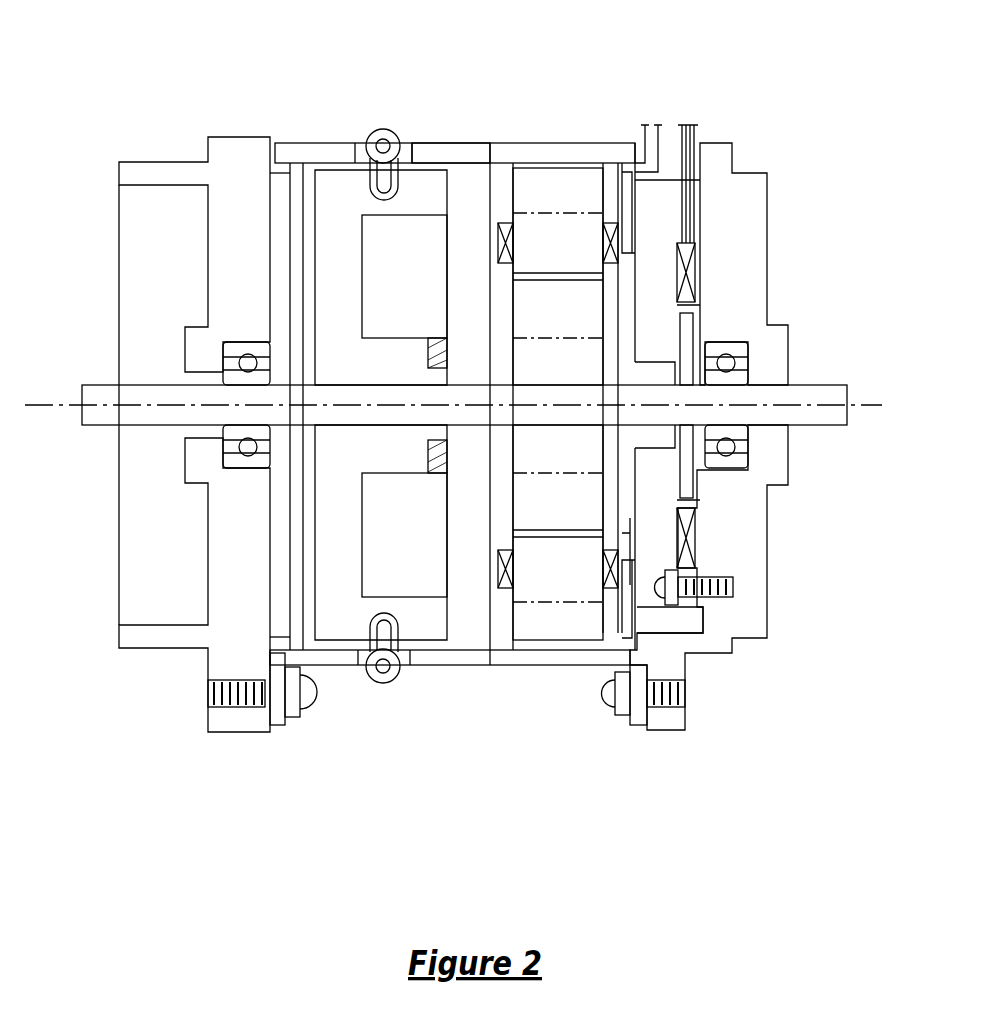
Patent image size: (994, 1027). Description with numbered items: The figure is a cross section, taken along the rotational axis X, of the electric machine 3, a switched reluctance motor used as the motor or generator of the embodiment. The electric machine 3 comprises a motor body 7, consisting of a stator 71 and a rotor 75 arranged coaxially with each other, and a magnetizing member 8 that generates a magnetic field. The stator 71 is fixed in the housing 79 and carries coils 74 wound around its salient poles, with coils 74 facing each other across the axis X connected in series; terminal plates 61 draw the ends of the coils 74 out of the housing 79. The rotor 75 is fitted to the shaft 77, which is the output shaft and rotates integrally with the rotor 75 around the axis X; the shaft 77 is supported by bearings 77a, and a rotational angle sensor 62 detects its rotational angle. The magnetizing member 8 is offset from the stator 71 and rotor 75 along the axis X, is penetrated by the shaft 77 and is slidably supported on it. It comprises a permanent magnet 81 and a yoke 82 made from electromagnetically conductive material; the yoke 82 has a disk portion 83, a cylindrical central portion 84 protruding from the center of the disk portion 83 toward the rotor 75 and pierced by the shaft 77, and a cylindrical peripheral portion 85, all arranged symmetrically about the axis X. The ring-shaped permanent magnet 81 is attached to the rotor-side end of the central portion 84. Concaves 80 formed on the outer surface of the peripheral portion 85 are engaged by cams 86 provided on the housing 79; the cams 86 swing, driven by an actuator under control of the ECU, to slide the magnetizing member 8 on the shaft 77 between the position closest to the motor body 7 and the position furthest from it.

The electric machine 3 is at (607, 824).
The motor body 7 is at (613, 56).
The magnetizing member 8 is at (434, 143).
The terminal plates 61 is at (636, 225).
The rotational angle sensor 62 is at (695, 273).
The stator 71 is at (523, 168).
The coils 74 is at (505, 222).
The rotor 75 is at (584, 278).
The shaft 77 is at (151, 428).
The bearings 77a is at (248, 470).
The housing 79 is at (282, 143).
The concaves 80 is at (395, 143).
The permanent magnet 81 is at (443, 460).
The yoke 82 is at (330, 175).
The disk portion 83 is at (335, 630).
The central portion 84 is at (404, 473).
The peripheral portion 85 is at (437, 650).
The cams 86 is at (350, 130).
The axis X is at (873, 410).